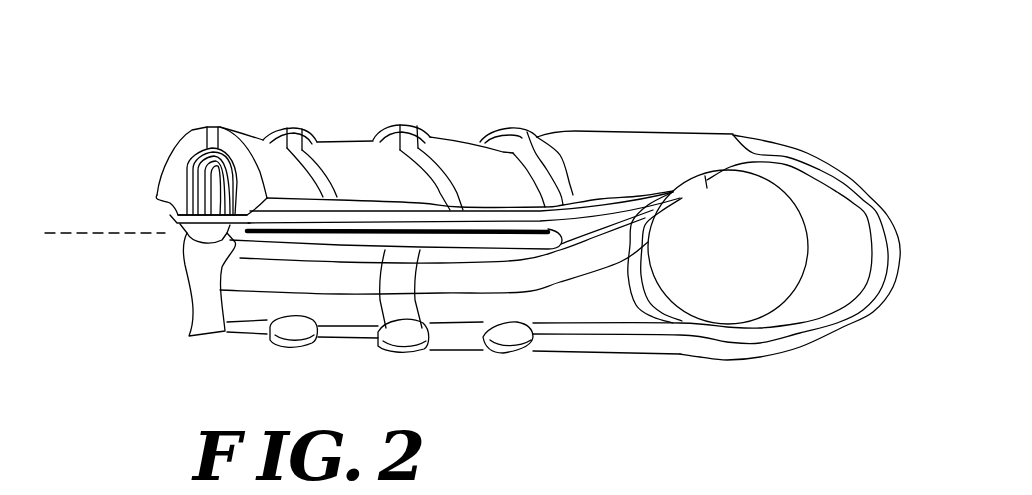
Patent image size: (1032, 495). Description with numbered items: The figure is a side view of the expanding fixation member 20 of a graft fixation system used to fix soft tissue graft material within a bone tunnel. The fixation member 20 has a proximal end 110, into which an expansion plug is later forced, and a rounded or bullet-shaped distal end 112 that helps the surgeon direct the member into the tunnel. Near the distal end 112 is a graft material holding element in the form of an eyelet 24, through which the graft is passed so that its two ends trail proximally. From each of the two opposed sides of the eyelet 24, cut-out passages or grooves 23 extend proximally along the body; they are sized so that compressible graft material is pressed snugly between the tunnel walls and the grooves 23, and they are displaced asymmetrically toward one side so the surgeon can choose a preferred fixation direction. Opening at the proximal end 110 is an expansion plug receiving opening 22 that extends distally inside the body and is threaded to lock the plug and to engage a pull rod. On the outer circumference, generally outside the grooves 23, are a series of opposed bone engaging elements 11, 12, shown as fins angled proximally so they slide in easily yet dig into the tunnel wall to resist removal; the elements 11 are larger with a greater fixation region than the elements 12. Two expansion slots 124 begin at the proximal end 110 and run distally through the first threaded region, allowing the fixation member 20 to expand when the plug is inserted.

The fixation member 20 is at (559, 76).
The bone engaging elements 11 is at (203, 128).
The bone engaging elements 12 is at (197, 340).
The expansion plug receiving opening 22 is at (193, 205).
The grooves 23 is at (207, 292).
The eyelet 24 is at (780, 210).
The proximal end 110 is at (177, 165).
The distal end 112 is at (855, 313).
The expansion slots 124 is at (183, 230).